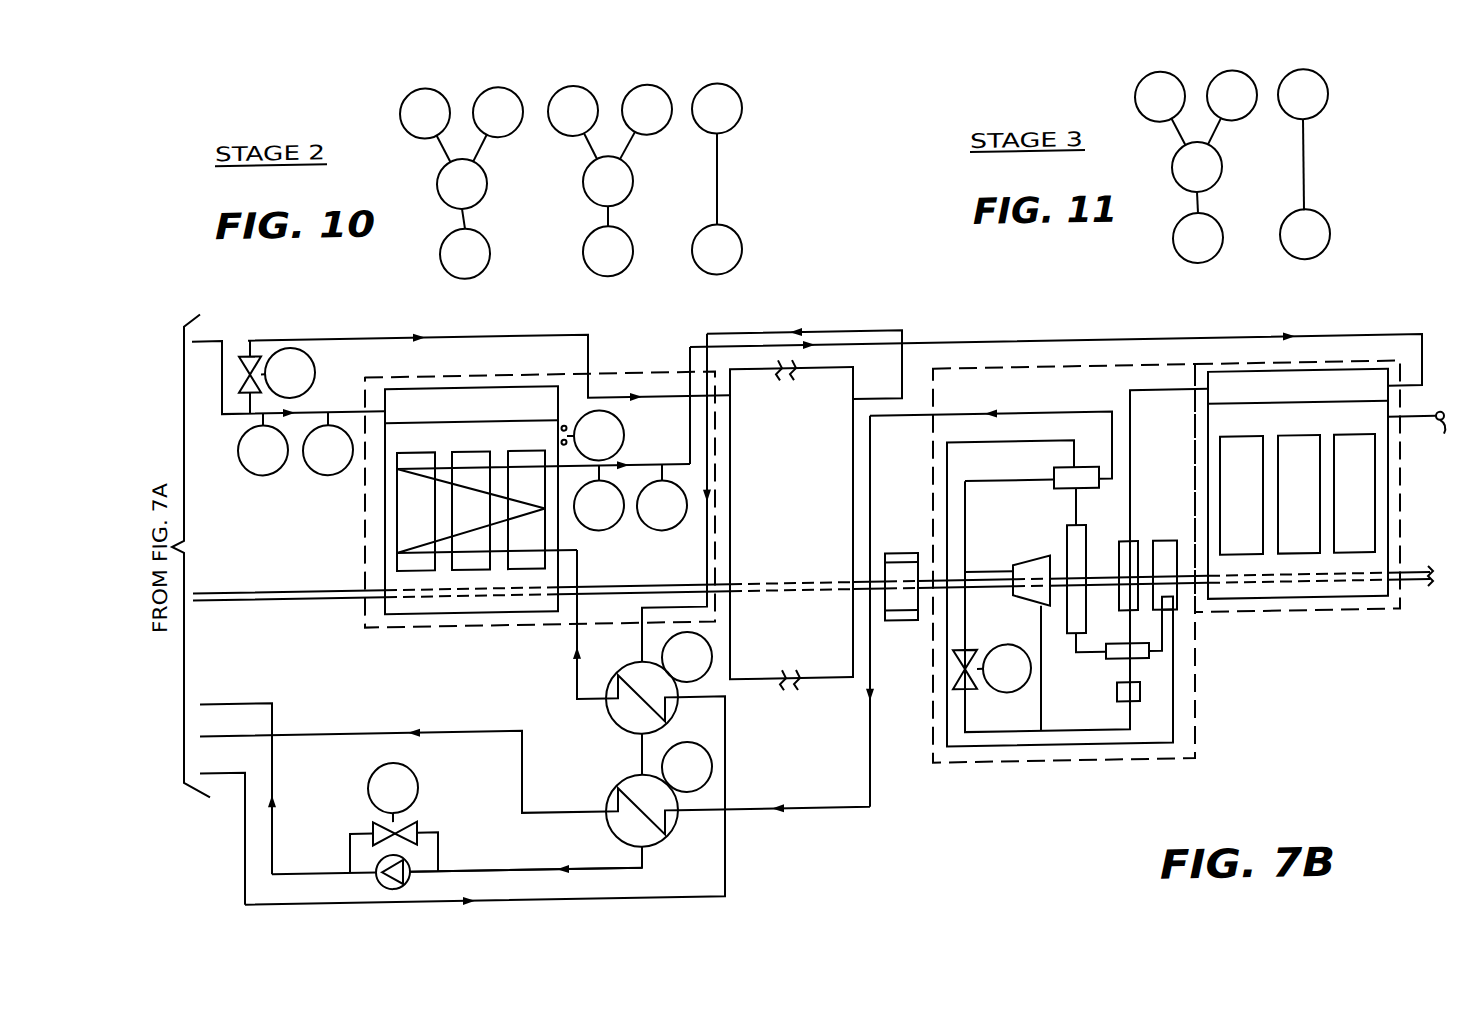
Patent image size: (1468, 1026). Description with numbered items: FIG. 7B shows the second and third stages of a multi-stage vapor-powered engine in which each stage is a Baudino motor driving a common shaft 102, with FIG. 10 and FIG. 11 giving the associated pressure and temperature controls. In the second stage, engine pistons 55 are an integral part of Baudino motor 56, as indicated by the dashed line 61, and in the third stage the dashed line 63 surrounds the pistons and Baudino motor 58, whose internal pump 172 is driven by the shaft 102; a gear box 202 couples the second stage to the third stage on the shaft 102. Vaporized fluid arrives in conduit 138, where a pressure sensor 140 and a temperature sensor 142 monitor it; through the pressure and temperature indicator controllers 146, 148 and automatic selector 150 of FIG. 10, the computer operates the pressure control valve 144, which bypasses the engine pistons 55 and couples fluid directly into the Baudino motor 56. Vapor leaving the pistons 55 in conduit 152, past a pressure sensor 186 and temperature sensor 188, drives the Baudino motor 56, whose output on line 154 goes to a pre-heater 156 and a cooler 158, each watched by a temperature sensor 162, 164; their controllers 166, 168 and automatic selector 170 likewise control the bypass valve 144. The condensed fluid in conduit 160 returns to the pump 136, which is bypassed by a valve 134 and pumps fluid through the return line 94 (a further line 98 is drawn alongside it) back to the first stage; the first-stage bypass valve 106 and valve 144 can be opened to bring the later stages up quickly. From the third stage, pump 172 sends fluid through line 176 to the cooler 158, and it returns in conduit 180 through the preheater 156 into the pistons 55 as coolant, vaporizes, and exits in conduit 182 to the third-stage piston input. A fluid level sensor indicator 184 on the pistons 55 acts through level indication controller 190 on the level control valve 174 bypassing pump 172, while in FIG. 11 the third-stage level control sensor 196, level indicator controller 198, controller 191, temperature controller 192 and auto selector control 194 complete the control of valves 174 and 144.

In FIG. 7B, the engine pistons 55 is at (475, 382).
In FIG. 7B, the Baudino motor 56 is at (802, 440).
In FIG. 7B, the Baudino motor 58 is at (1069, 371).
In FIG. 7B, the dashed line 61 is at (462, 622).
In FIG. 7B, the dashed line 63 is at (1268, 609).
In FIG. 7B, the fluid return line 94 is at (247, 694).
In FIG. 7B, the coolant line 98 is at (352, 726).
In FIG. 7B, the shaft 102 is at (300, 583).
In FIG. 10, the bypass valve 106 is at (440, 250).
In FIG. 7B, the valve 134 is at (368, 779).
In FIG. 7B, the pump 136 is at (380, 860).
In FIG. 7B, the conduit 138 is at (210, 328).
In FIG. 7B, the pressure sensor 140 is at (266, 466).
In FIG. 7B, the temperature sensor 142 is at (337, 469).
In FIG. 10, the pressure control valve 144 is at (584, 252).
In FIG. 11, the pressure control valve 144 is at (1175, 250).
In FIG. 7B, the pressure control valve 144 is at (313, 355).
In FIG. 10, the pressure indicator controller 146 is at (434, 82).
In FIG. 10, the temperature indicator controller 148 is at (516, 83).
In FIG. 10, the automatic selector 150 is at (487, 180).
In FIG. 7B, the conduit 152 is at (625, 394).
In FIG. 7B, the line 154 is at (883, 332).
In FIG. 7B, the pre-heater 156 is at (615, 723).
In FIG. 7B, the cooler 158 is at (627, 778).
In FIG. 7B, the conduit 160 is at (525, 864).
In FIG. 7B, the temperature sensor 162 is at (710, 648).
In FIG. 7B, the temperature sensor 164 is at (708, 746).
In FIG. 10, the temperature indicator and controller 166 is at (591, 88).
In FIG. 10, the temperature indicator and controller 168 is at (668, 61).
In FIG. 10, the automatic selector 170 is at (633, 179).
In FIG. 7B, the internal pump 172 is at (1030, 611).
In FIG. 10, the level control valve 174 is at (741, 260).
In FIG. 11, the level control valve 174 is at (1329, 250).
In FIG. 7B, the level control valve 174 is at (1019, 695).
In FIG. 7B, the line 176 is at (917, 418).
In FIG. 7B, the conduit 180 is at (245, 845).
In FIG. 7B, the conduit 182 is at (740, 345).
In FIG. 7B, the fluid level sensor indicator 184 is at (620, 446).
In FIG. 7B, the pressure sensor 186 is at (623, 515).
In FIG. 7B, the temperature sensor 188 is at (680, 521).
In FIG. 10, the level indication controller 190 is at (756, 72).
In FIG. 11, the proportional-integral controller 191 is at (1158, 78).
In FIG. 11, the temperature controller 192 is at (1242, 80).
In FIG. 11, the auto selector control 194 is at (1222, 179).
In FIG. 7B, the fluid level control sensor 196 is at (1418, 436).
In FIG. 11, the level indicator controller 198 is at (1332, 65).
In FIG. 7B, the gear box 202 is at (907, 540).